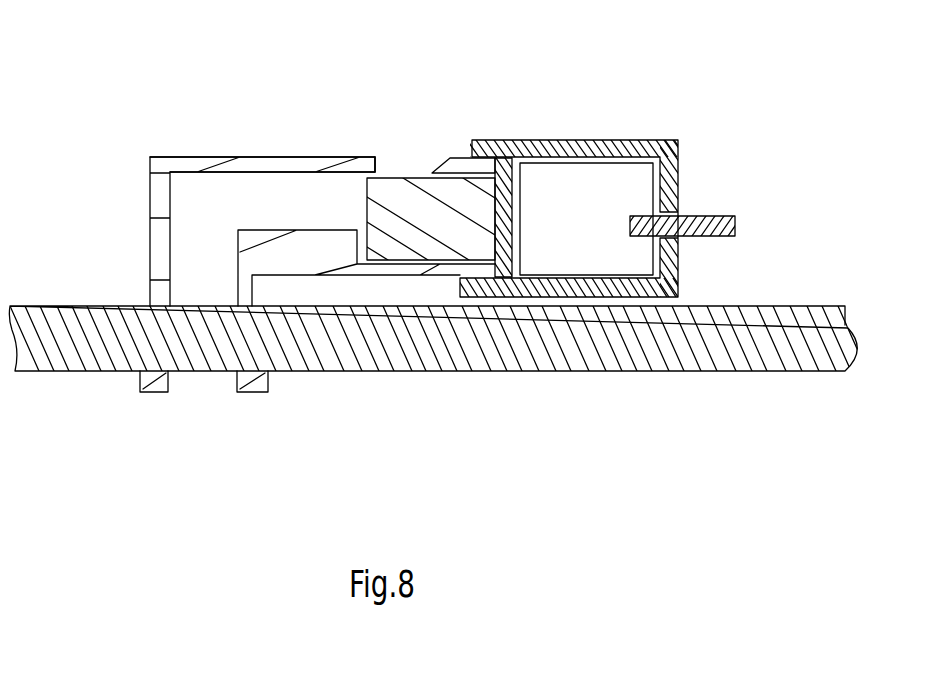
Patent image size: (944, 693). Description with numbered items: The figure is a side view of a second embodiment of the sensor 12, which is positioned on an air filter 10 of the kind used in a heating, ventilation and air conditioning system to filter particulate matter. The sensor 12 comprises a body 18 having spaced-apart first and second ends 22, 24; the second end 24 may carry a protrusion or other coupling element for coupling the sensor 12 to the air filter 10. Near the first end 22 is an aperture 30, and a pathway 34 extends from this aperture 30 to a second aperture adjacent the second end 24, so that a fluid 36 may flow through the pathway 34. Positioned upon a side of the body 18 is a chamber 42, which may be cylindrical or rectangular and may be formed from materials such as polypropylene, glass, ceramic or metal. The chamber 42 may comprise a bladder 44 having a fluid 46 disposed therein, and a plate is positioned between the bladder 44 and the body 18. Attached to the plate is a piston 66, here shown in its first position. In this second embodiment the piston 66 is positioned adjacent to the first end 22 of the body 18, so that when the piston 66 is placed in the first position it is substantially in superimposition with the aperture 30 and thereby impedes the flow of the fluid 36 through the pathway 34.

The air filter 10 is at (850, 342).
The sensor 12 is at (322, 162).
The body 18 is at (282, 157).
The first end 22 is at (596, 164).
The second end 24 is at (167, 420).
The aperture 30 is at (431, 165).
The pathway 34 is at (324, 180).
The fluid 36 is at (243, 208).
The chamber 42 is at (652, 143).
The bladder 44 is at (595, 163).
The fluid 46 is at (547, 175).
The piston 66 is at (418, 188).